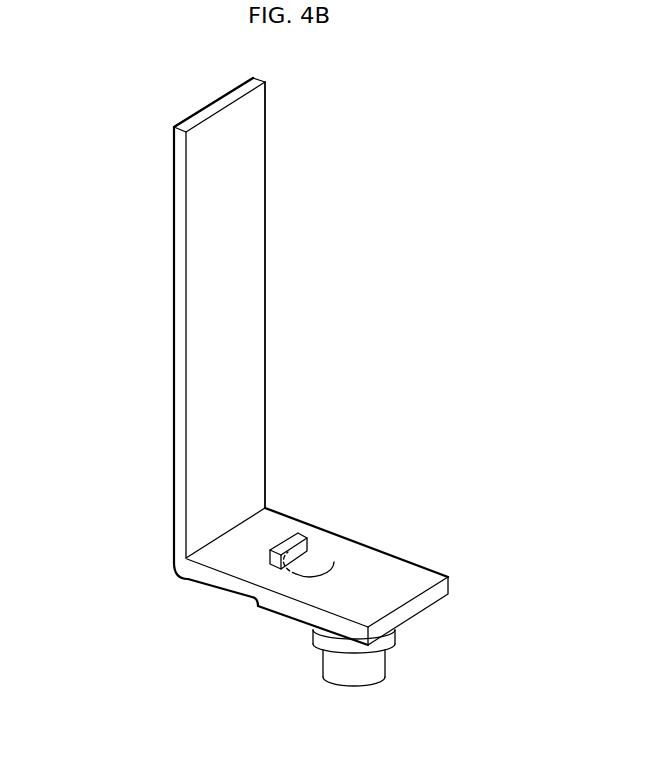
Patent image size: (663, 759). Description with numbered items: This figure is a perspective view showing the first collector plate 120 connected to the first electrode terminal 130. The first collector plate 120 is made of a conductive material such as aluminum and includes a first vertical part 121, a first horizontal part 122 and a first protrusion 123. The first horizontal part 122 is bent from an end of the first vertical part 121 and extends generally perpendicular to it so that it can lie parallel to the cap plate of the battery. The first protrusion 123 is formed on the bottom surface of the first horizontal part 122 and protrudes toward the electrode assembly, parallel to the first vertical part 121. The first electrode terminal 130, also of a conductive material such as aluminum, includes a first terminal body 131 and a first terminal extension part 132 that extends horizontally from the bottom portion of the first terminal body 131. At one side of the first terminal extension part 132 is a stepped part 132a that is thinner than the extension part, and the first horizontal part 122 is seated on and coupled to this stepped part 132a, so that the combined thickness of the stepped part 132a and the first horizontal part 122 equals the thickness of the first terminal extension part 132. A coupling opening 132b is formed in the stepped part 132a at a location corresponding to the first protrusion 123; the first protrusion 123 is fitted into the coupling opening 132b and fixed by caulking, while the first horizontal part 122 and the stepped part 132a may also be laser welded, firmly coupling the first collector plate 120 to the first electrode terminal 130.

The first collector plate 120 is at (83, 467).
The first vertical part 121 is at (185, 447).
The first horizontal part 122 is at (210, 583).
The first protrusion 123 is at (270, 548).
The first electrode terminal 130 is at (500, 631).
The first terminal body 131 is at (375, 668).
The first terminal extension part 132 is at (407, 588).
The stepped part 132a is at (240, 579).
The coupling opening 132b is at (322, 577).